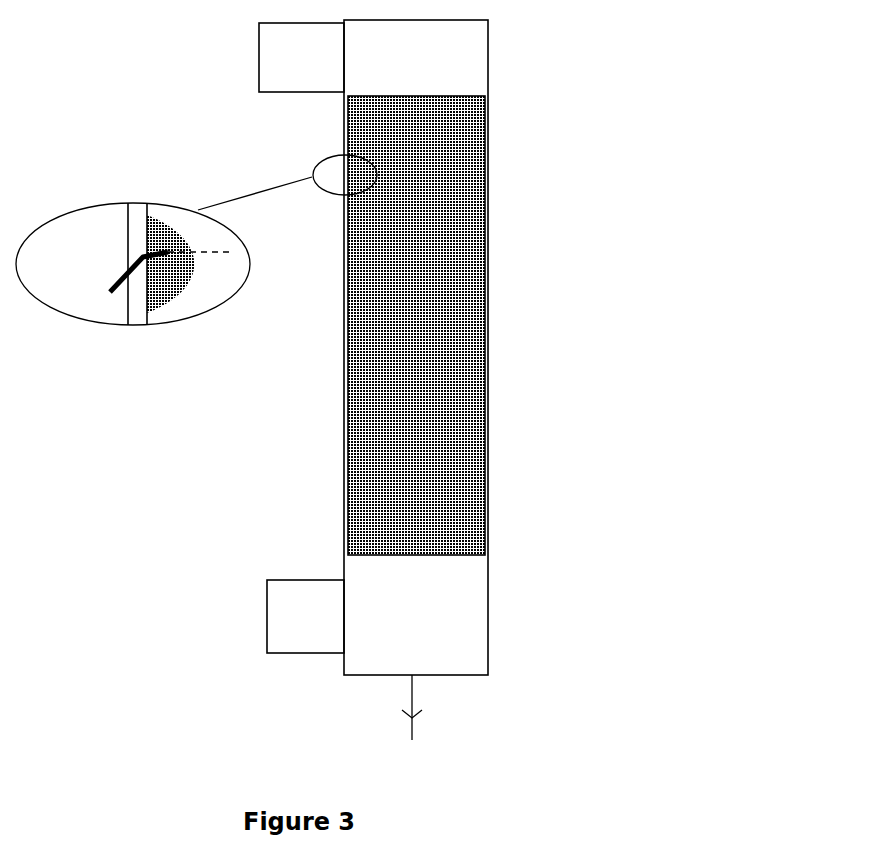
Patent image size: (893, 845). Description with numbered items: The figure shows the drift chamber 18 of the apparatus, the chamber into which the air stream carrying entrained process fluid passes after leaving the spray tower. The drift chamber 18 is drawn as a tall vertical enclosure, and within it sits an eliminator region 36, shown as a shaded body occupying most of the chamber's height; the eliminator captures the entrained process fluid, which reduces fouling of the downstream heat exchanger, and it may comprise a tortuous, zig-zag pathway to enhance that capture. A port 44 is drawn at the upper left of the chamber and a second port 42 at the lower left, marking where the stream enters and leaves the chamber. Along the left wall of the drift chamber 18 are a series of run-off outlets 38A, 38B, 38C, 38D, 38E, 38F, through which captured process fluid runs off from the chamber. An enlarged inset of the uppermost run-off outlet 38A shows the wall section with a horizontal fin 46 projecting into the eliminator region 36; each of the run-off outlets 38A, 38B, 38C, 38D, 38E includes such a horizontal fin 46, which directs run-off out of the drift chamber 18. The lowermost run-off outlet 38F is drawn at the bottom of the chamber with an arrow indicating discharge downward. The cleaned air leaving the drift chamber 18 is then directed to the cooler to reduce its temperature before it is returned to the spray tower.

The drift chamber 18 is at (108, 130).
The porous medium 36 is at (447, 238).
The inlet 44 is at (228, 57).
The outlet 42 is at (202, 622).
The run-off outlet 38A is at (342, 168).
The run-off outlet 38B is at (342, 255).
The run-off outlet 38C is at (342, 357).
The run-off outlet 38D is at (343, 445).
The run-off outlet 38E is at (342, 540).
The run-off outlet 38F is at (413, 727).
The horizontal fin 46 is at (171, 256).